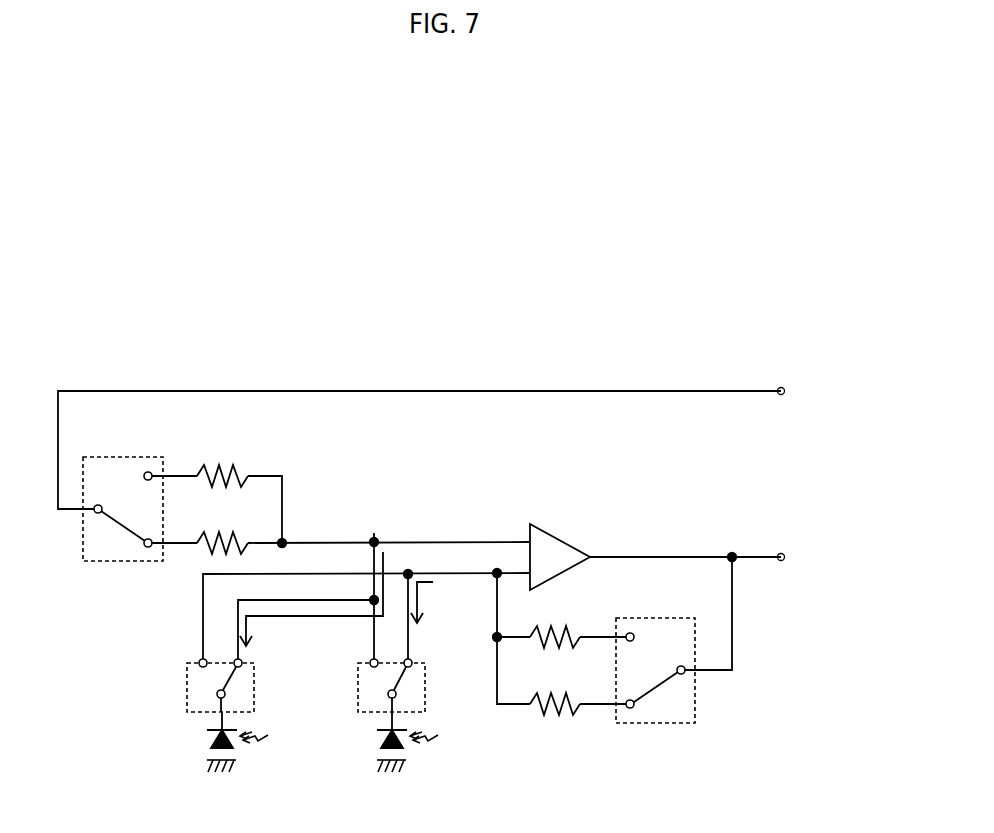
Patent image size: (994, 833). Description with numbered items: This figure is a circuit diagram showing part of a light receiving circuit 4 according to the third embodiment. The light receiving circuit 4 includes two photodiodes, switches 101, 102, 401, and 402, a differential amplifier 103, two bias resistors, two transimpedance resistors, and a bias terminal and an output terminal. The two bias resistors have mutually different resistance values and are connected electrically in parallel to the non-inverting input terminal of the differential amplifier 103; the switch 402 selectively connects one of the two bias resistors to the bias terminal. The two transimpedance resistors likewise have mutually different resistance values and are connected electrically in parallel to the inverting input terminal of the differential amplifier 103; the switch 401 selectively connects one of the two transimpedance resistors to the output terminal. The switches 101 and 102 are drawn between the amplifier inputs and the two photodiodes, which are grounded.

The light receiving circuit 4 is at (461, 337).
The switch 101 is at (187, 663).
The switch 102 is at (358, 663).
The differential amplifier 103 is at (565, 533).
The switch 401 is at (640, 618).
The switch 402 is at (110, 457).